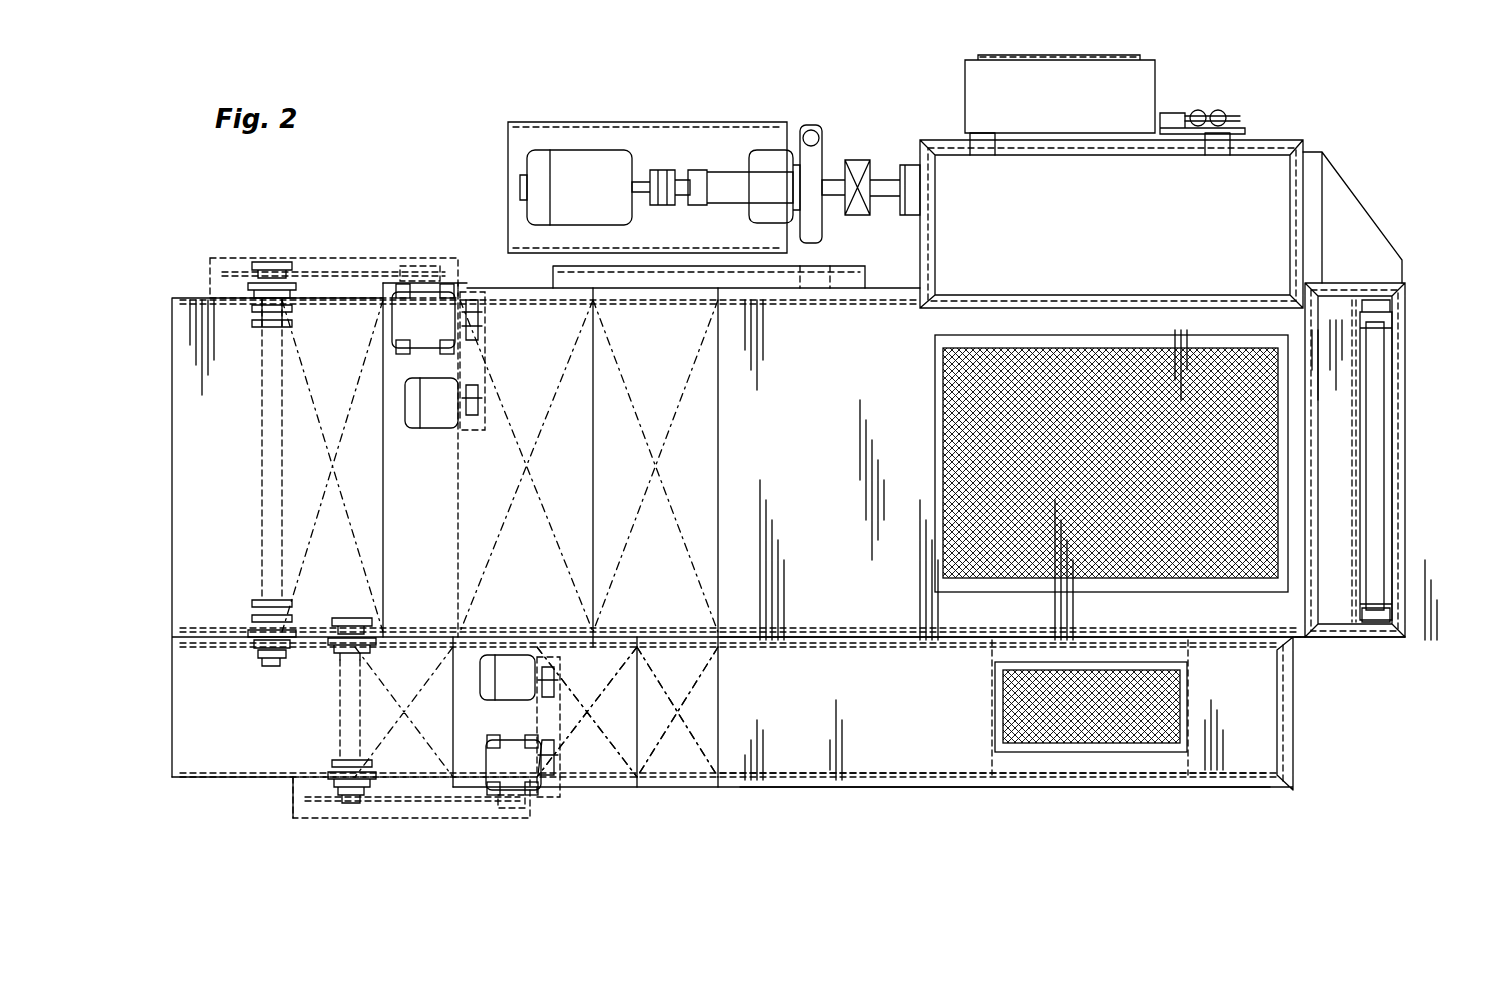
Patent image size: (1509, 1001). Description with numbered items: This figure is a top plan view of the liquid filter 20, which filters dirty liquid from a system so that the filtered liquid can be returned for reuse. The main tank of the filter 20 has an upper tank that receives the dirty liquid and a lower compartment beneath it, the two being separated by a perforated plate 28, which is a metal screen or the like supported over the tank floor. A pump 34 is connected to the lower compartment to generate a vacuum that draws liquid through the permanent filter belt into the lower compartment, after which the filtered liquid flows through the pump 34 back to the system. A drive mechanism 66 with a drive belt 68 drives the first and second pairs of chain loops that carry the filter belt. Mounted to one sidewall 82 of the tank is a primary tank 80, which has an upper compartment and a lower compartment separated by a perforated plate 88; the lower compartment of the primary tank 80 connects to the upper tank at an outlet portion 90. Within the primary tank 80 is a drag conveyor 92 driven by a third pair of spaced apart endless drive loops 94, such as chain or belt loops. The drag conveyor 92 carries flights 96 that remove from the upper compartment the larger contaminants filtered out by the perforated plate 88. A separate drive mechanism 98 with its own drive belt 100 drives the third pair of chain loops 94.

The liquid filter 20 is at (1318, 70).
The perforated plate 28 is at (1265, 450).
The pump 34 is at (608, 160).
The drive mechanism 66 is at (432, 310).
The drive belt 68 is at (467, 355).
The primary tank 80 is at (945, 790).
The sidewall 82 is at (768, 648).
The perforated plate 88 is at (1165, 730).
The outlet portion 90 is at (1280, 645).
The drag conveyor 92 is at (742, 783).
The third pair of spaced apart endless drive loops 94 is at (705, 780).
The flights 96 is at (597, 757).
The drive mechanism 98 is at (518, 765).
The drive belt 100 is at (460, 805).